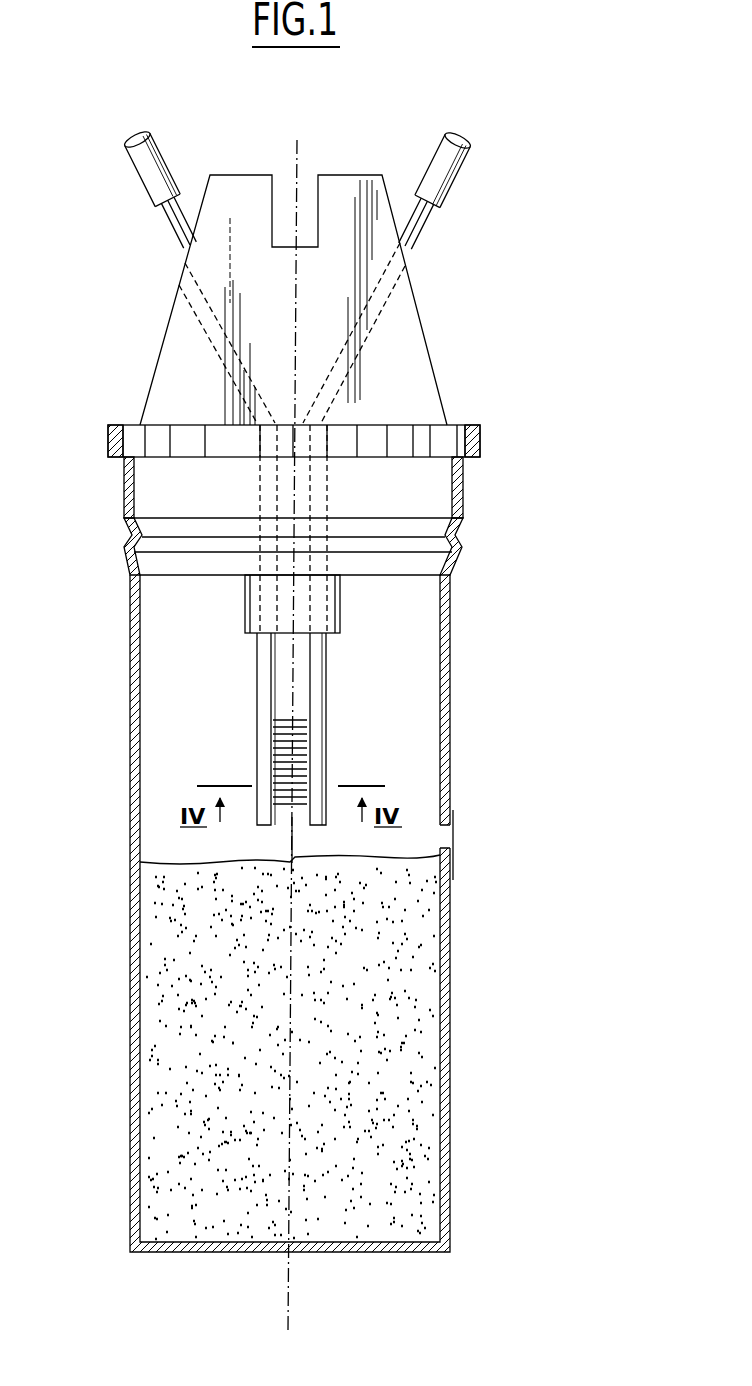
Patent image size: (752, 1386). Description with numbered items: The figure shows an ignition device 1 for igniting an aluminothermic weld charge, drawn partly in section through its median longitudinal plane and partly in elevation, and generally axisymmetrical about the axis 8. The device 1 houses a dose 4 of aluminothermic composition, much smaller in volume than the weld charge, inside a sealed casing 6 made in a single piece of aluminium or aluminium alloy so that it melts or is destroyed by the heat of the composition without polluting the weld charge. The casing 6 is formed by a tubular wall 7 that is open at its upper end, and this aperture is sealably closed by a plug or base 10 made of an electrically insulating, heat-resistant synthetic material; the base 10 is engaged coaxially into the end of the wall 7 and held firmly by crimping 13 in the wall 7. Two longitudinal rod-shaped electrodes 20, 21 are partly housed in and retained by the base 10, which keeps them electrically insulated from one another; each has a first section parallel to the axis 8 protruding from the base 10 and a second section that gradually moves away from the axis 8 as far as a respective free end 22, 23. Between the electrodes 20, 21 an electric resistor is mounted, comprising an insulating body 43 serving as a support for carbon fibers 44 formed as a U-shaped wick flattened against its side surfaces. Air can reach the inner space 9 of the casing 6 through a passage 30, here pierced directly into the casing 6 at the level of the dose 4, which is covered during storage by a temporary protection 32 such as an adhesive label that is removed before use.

The ignition device 1 is at (83, 893).
The dose of aluminothermic composition 4 is at (406, 987).
The sealed casing 6 is at (128, 1093).
The tubular wall 7 is at (130, 1053).
The axis 8 is at (300, 156).
The inner space 9 is at (160, 598).
The plug (base) 10 is at (432, 370).
The crimping 13 is at (108, 531).
The electrode 20 is at (420, 237).
The electrode 21 is at (176, 236).
The free end 22 is at (458, 178).
The free end 23 is at (146, 190).
The passage 30 is at (452, 840).
The temporary protection 32 is at (456, 820).
The insulating body 43 is at (283, 727).
The carbon fibers 44 is at (270, 762).